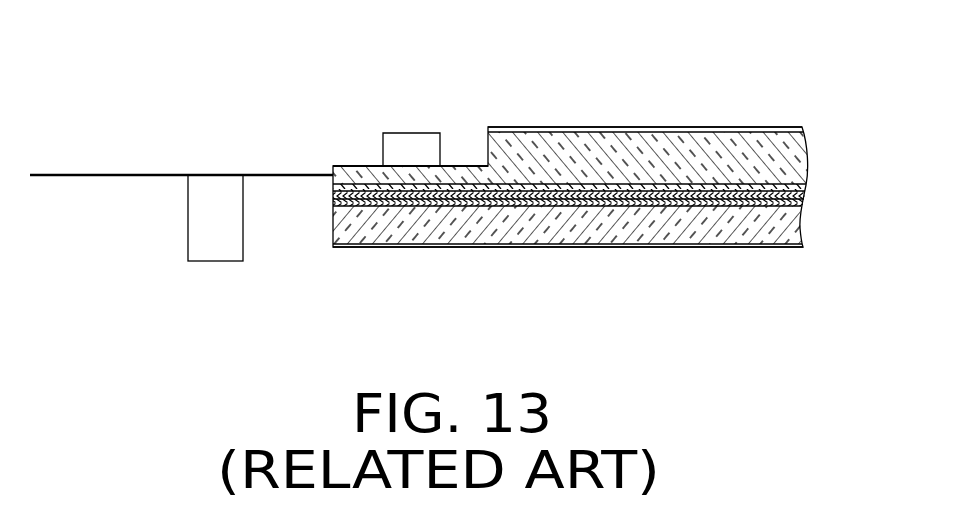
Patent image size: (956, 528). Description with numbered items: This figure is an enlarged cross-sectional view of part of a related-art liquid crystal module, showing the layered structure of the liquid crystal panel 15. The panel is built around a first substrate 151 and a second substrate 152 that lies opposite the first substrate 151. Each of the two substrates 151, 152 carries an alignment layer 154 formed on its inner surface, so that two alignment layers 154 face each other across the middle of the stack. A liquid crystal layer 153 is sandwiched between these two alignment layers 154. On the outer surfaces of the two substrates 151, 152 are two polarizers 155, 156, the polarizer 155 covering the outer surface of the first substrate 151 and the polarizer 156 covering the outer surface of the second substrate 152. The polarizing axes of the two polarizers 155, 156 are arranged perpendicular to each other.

The liquid crystal panel 15 is at (476, 69).
The first substrate 151 is at (732, 158).
The second substrate 152 is at (743, 222).
The liquid crystal layer 153 is at (797, 197).
The alignment layer 154 is at (797, 185).
The polarizer 155 is at (630, 128).
The polarizer 156 is at (649, 247).